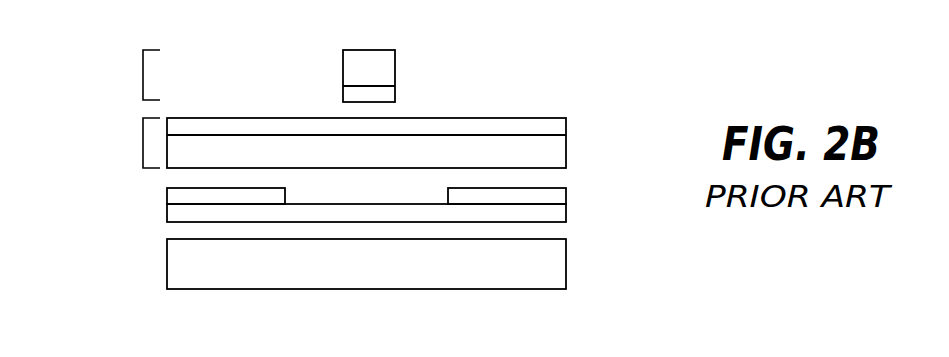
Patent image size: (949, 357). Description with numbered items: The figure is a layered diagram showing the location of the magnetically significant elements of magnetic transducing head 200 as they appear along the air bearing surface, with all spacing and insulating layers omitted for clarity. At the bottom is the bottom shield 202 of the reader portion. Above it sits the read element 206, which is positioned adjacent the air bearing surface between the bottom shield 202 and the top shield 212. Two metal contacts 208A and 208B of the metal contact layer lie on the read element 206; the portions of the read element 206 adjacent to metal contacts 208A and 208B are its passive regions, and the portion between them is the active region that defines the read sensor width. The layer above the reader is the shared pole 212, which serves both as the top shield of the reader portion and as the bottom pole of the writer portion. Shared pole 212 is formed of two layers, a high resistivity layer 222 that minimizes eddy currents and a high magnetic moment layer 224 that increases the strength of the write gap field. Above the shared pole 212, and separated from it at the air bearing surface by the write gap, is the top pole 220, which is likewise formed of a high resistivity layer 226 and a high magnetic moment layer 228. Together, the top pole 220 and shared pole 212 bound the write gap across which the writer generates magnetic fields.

The transducing head 200 is at (503, 83).
The bottom shield 202 is at (385, 276).
The read element 206 is at (193, 215).
The metal contact 208A is at (190, 199).
The metal contact 208B is at (546, 198).
The top shield / bottom pole (shared pole) 212 is at (143, 143).
The top pole 220 is at (143, 76).
The high resistivity layer 222 is at (387, 164).
The high magnetic moment layer 224 is at (540, 131).
The high resistivity layer 226 is at (386, 77).
The high magnetic moment layer 228 is at (377, 98).